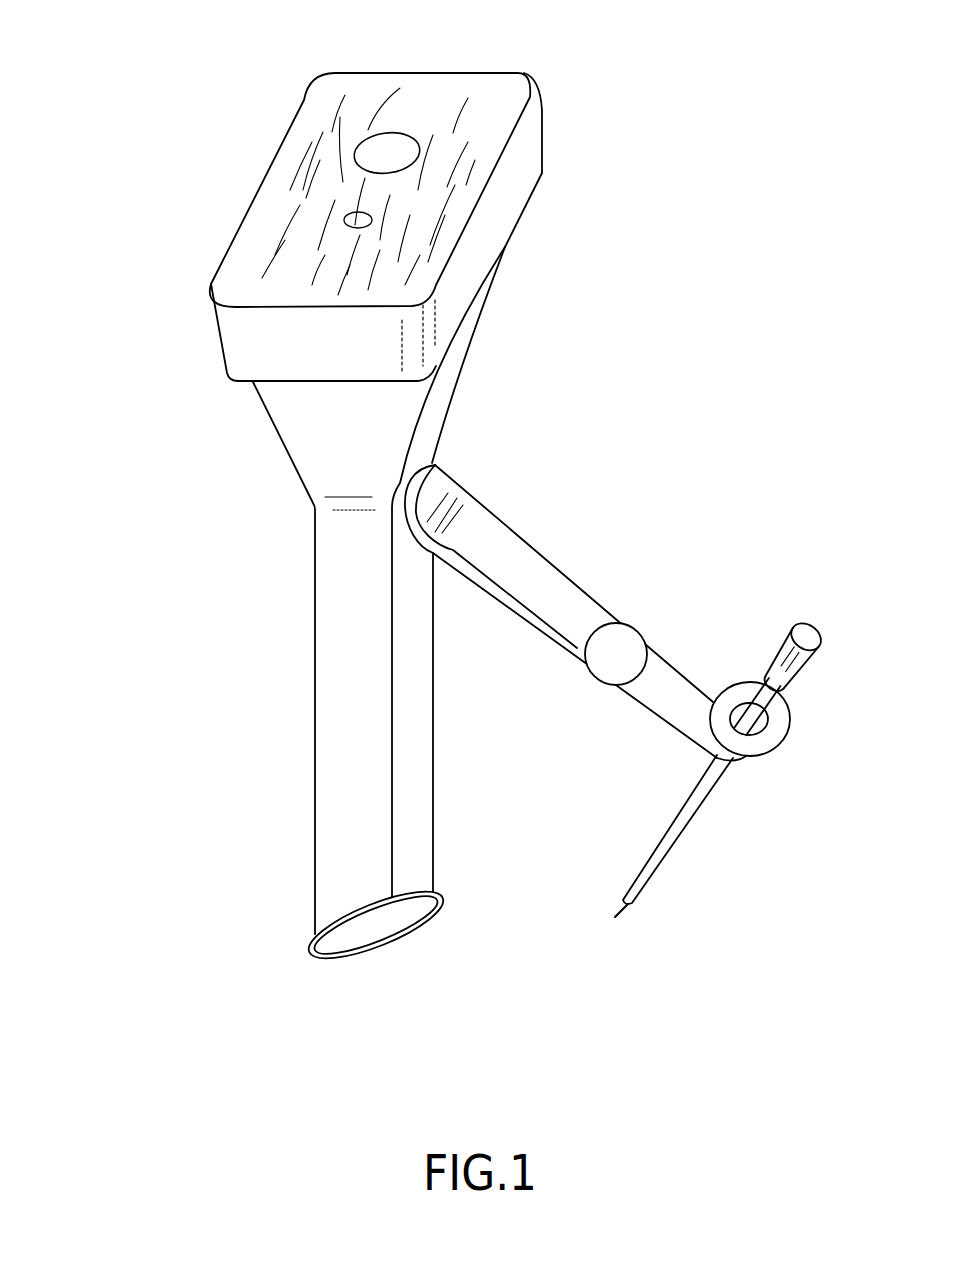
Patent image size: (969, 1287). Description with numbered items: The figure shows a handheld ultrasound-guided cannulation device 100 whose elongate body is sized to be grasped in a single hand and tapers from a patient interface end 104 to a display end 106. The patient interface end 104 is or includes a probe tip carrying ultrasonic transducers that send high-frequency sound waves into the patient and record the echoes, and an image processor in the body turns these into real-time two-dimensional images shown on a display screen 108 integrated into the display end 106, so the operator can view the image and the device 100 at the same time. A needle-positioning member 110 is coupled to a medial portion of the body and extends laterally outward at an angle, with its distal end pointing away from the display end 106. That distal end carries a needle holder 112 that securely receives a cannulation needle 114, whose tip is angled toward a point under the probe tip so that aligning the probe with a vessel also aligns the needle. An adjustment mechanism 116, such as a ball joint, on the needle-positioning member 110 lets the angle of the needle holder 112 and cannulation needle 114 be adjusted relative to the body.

The ultrasound-guided cannulation device 100 is at (475, 565).
The patient interface end 104 is at (360, 933).
The display end 106 is at (258, 232).
The display screen 108 is at (372, 153).
The needle-positioning member 110 is at (530, 598).
The needle holder 112 is at (793, 717).
The cannulation needle 114 is at (647, 880).
The adjustment mechanism 116 is at (627, 646).